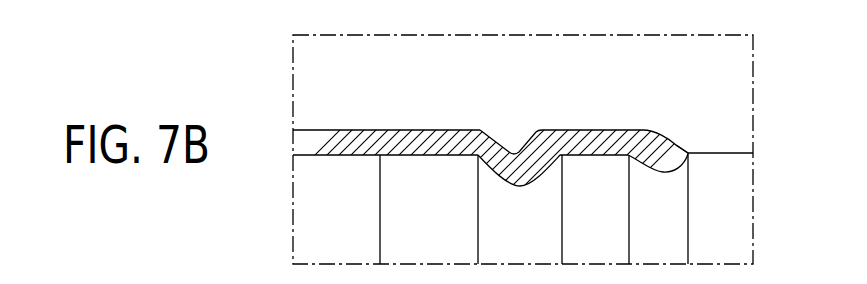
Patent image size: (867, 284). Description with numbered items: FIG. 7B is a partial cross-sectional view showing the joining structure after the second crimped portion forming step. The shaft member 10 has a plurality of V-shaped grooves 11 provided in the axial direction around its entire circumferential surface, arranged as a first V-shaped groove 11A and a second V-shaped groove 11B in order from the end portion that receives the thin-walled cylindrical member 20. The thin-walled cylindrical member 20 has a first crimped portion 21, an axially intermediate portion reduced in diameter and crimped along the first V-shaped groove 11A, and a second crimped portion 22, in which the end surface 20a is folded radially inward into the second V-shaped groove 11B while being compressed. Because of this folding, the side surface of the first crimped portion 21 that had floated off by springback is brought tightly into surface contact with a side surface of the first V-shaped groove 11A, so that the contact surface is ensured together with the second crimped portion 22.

The shaft member 10 is at (727, 165).
The thin-walled cylindrical member 20 is at (408, 142).
The end surface 20a is at (698, 152).
The first crimped portion 21 is at (511, 122).
The second crimped portion 22 is at (664, 124).
The V-shaped grooves 11 is at (647, 88).
The first V-shaped groove 11A is at (510, 183).
The second V-shaped groove 11B is at (660, 168).